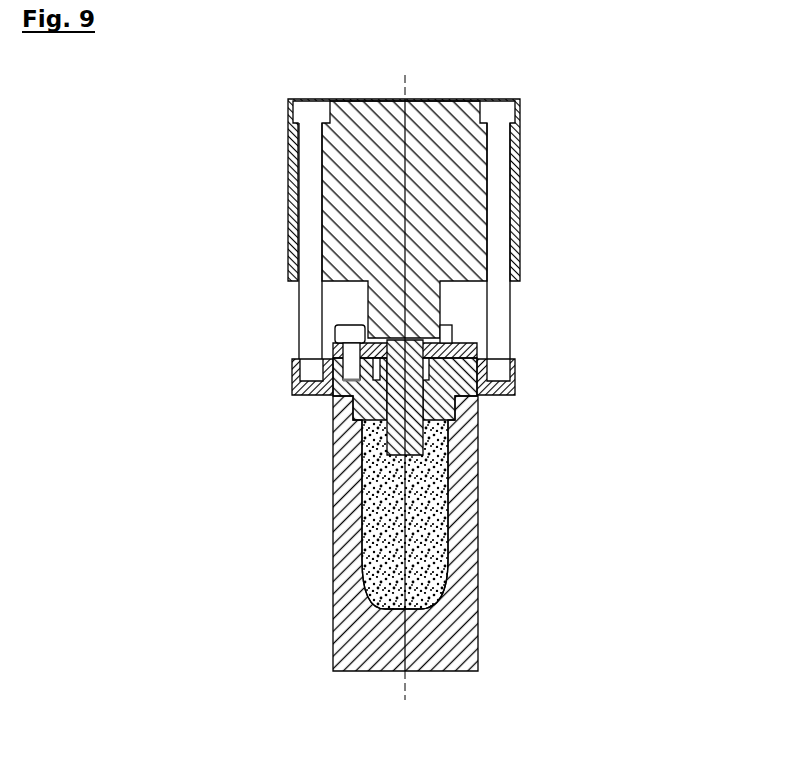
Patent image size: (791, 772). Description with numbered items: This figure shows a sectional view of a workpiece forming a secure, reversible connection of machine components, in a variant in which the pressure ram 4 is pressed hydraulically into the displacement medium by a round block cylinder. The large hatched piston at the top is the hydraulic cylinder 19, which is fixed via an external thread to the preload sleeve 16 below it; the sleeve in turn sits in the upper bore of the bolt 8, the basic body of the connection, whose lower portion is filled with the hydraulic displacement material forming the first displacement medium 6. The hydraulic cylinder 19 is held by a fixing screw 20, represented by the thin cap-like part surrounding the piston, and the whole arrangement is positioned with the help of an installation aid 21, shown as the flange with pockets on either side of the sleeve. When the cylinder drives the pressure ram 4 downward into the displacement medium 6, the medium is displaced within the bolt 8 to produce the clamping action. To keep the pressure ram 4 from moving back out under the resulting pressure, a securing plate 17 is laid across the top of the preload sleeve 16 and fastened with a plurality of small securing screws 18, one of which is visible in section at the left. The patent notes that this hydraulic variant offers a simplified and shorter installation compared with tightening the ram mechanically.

The pressure ram 4 is at (447, 447).
The first displacement medium 6 is at (373, 475).
The bolt 8 is at (340, 435).
The preload sleeve 16 is at (473, 395).
The securing plate 17 is at (475, 352).
The securing screw 18 is at (343, 336).
The hydraulic cylinder 19 is at (470, 188).
The fixing screw 20 is at (310, 183).
The installation aid 21 is at (517, 386).